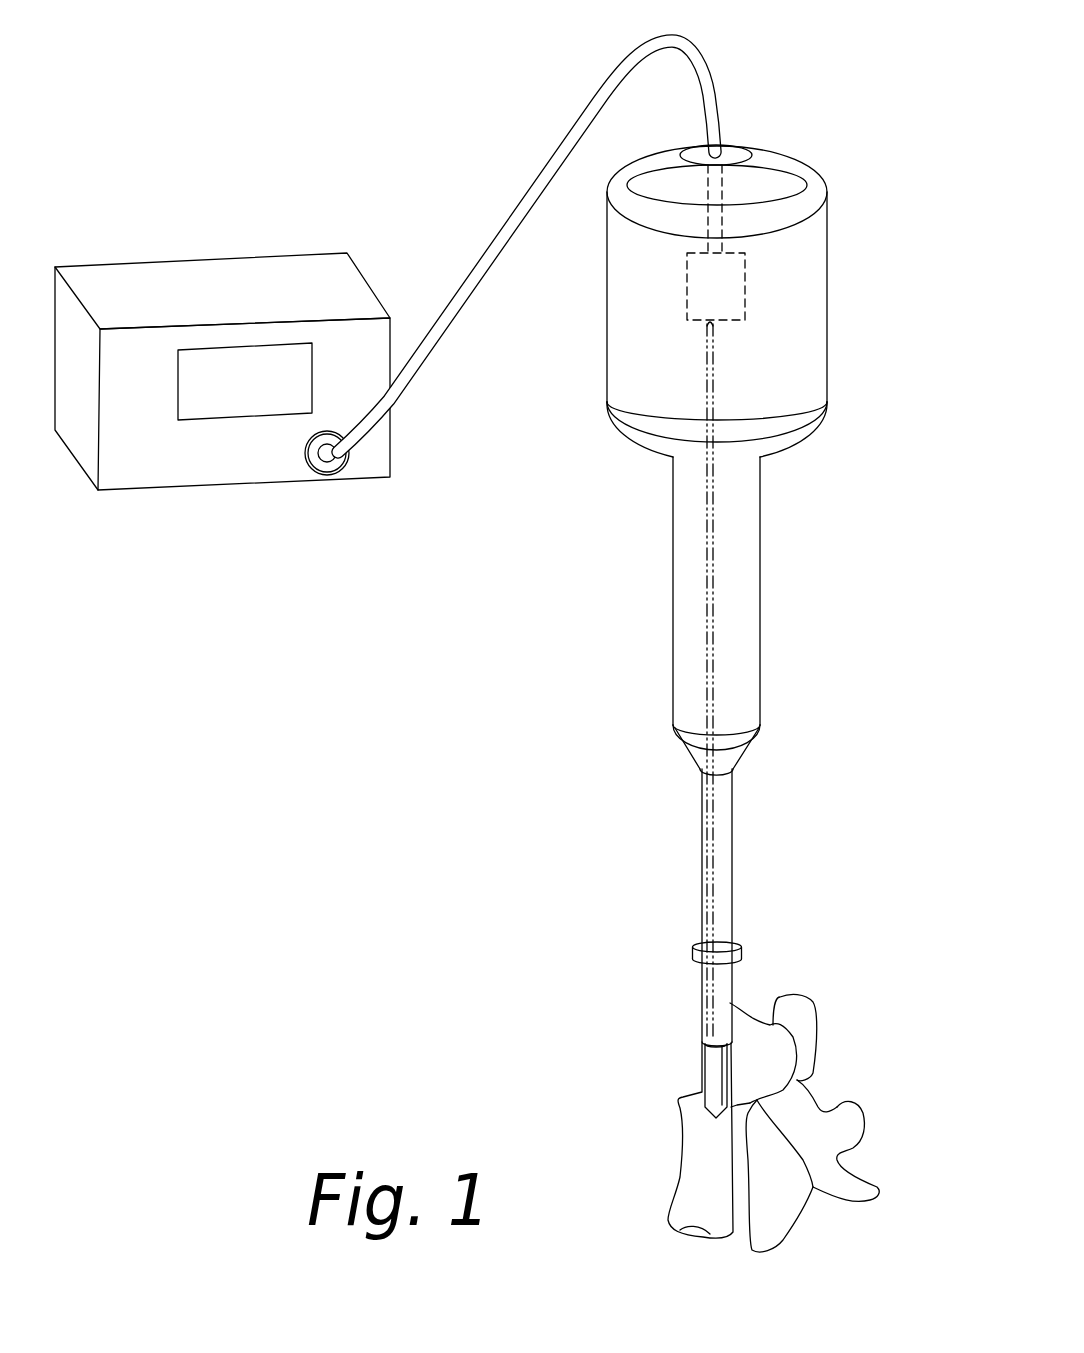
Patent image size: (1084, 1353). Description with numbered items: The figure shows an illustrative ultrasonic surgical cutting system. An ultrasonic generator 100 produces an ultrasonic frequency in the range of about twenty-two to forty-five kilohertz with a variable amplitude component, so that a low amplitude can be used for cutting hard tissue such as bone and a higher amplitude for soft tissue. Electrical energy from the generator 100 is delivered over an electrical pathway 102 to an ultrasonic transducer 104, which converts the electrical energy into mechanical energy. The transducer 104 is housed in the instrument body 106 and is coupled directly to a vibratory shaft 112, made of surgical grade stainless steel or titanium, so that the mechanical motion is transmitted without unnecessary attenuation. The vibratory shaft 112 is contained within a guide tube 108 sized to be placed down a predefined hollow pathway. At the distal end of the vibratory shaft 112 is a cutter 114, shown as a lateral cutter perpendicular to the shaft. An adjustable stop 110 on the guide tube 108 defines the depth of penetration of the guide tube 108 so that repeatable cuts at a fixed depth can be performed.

The ultrasonic generator 100 is at (248, 487).
The electrical pathway 102 is at (505, 231).
The ultrasonic transducer 104 is at (747, 298).
The handpiece housing 106 is at (827, 365).
The guide tube 108 is at (732, 860).
The adjustable stop 110 is at (741, 953).
The vibratory shaft 112 is at (707, 862).
The cutter 114 is at (703, 1043).